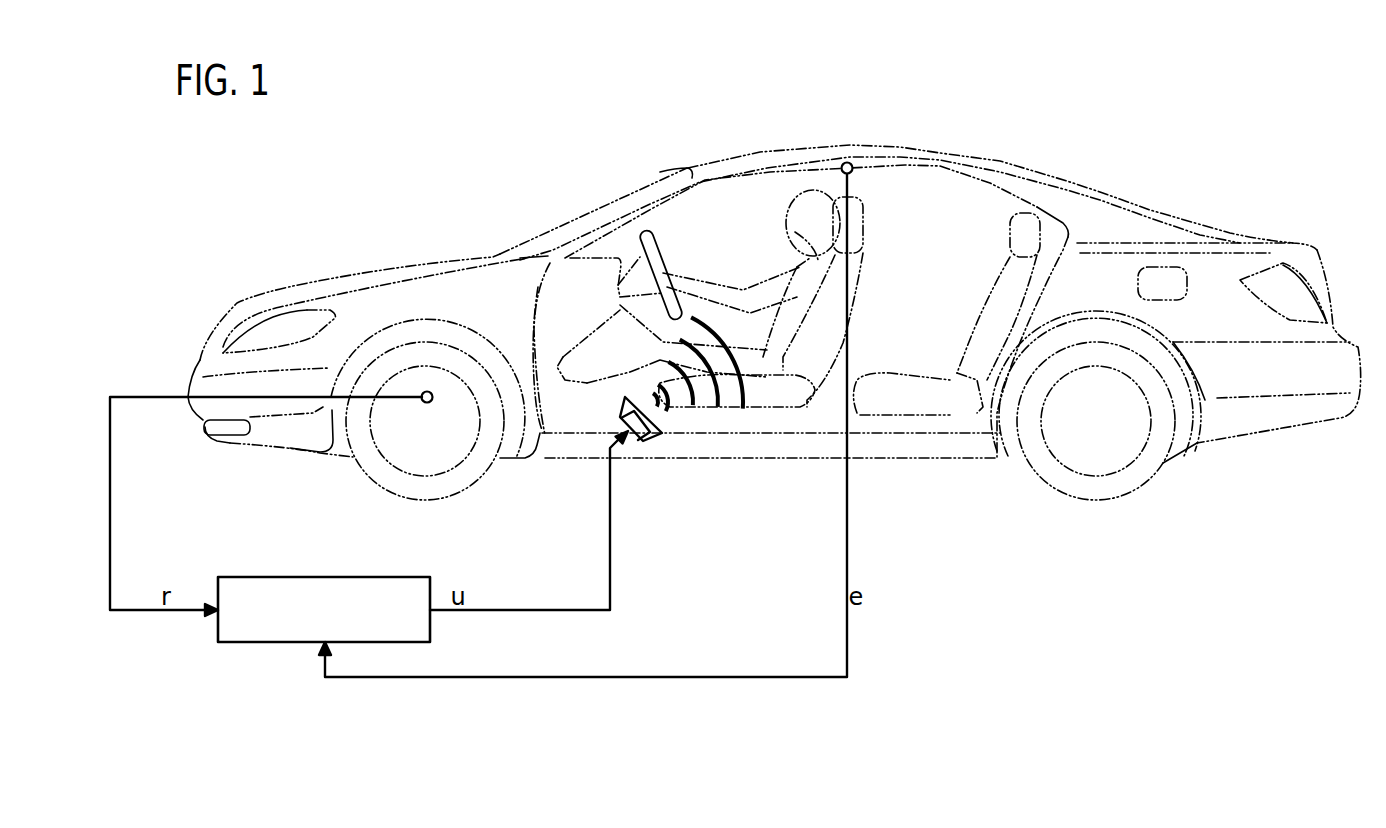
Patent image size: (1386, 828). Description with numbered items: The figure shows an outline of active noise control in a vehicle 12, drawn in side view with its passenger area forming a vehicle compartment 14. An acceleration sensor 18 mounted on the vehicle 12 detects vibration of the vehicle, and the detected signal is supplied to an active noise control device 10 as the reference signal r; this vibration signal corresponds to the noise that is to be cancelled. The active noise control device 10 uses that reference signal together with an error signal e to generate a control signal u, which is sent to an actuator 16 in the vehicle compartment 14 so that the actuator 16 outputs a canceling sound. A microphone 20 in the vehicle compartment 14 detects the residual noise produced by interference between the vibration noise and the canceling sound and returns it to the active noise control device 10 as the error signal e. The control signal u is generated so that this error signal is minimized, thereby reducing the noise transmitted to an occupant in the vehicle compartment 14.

The active noise control device 10 is at (385, 577).
The vehicle 12 is at (1088, 177).
The vehicle compartment 14 is at (958, 190).
The actuator 16 is at (660, 420).
The acceleration sensor 18 is at (430, 403).
The microphone 20 is at (853, 170).